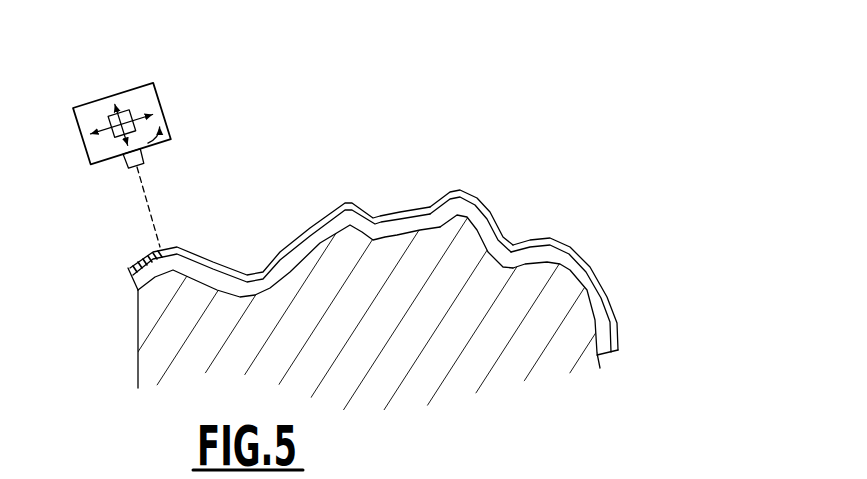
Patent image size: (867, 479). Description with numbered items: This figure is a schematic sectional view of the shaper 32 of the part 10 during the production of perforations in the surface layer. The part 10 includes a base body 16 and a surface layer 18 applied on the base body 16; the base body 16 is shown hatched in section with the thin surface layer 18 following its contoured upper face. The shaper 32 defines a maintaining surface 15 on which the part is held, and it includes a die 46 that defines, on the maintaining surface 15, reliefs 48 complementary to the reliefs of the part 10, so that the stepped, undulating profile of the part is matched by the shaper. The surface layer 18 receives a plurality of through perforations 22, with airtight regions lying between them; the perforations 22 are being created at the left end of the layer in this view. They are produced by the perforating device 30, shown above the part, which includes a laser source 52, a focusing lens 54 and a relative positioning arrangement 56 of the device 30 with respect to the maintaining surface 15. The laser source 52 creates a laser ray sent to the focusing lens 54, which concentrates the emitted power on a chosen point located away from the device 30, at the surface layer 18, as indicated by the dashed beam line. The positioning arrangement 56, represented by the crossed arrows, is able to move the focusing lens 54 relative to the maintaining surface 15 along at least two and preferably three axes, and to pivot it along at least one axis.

The part 10 is at (643, 175).
The maintaining surface 15 is at (397, 232).
The base body 16 is at (605, 343).
The surface layer 18 is at (603, 275).
The through perforations 22 is at (129, 264).
The perforating device 30 is at (205, 99).
The shaper 32 is at (613, 416).
The die 46 is at (542, 262).
The reliefs 48 is at (472, 226).
The laser source 52 is at (112, 118).
The focusing lens 54 is at (122, 158).
The relative positioning arrangement 56 is at (133, 114).